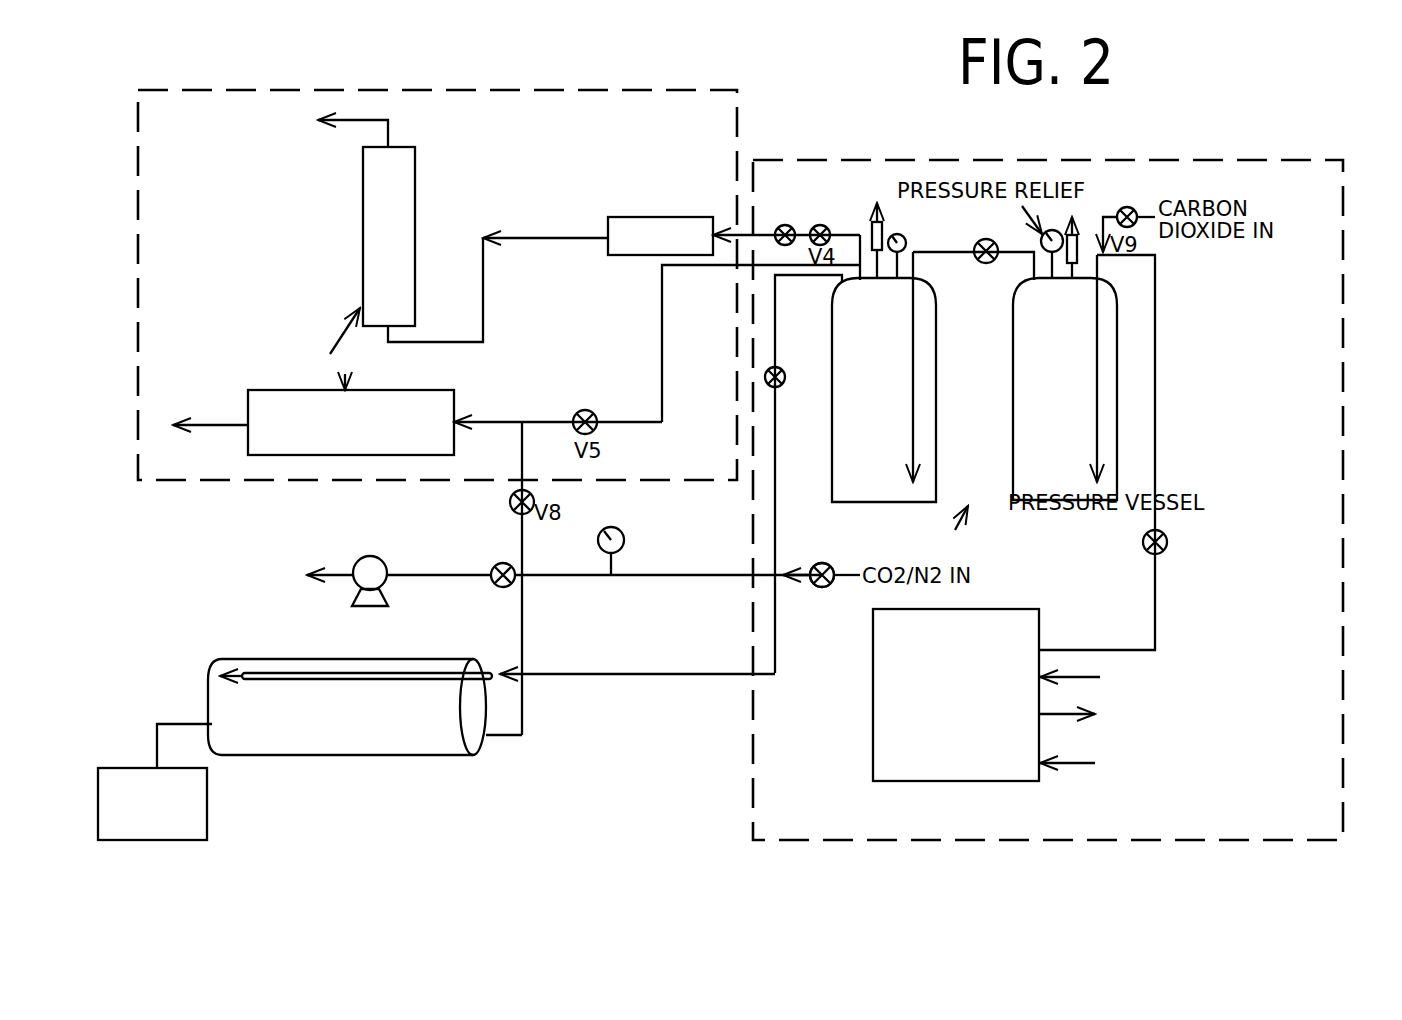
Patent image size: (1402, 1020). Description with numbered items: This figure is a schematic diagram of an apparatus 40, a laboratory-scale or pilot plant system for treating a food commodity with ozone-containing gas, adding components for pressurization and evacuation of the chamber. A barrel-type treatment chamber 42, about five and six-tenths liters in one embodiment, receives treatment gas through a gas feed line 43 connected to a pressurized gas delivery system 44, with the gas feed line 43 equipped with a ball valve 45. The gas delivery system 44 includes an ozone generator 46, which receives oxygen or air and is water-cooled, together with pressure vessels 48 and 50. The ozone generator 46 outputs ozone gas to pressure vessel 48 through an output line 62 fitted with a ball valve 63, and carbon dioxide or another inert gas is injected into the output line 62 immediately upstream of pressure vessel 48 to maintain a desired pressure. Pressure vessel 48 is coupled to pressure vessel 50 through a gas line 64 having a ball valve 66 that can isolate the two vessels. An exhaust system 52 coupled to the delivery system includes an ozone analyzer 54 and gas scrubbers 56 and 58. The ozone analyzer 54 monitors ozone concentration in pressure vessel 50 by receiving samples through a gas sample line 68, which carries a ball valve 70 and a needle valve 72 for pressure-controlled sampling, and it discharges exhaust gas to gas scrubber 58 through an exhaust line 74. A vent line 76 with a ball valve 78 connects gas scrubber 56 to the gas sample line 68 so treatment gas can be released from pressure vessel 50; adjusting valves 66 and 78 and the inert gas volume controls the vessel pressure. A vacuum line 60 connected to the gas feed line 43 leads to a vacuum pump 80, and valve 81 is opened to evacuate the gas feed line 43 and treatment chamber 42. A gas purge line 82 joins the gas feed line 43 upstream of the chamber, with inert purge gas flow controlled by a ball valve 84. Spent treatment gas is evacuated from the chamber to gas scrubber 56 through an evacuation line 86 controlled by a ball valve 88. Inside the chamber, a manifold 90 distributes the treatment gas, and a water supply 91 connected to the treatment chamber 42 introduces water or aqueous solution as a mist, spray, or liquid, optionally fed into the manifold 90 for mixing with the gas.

The apparatus 40 is at (1343, 150).
The treatment chamber 42 is at (347, 707).
The gas feed line 43 is at (686, 674).
The pressurized gas delivery system 44 is at (1343, 567).
The ball valve 45 is at (785, 380).
The ozone generator 46 is at (1083, 708).
The pressure vessel 48 is at (1065, 377).
The pressure vessel 50 is at (933, 377).
The exhaust system 52 is at (138, 205).
The ozone analyzer 54 is at (660, 211).
The gas scrubber 56 is at (331, 392).
The gas scrubber 58 is at (318, 218).
The vacuum line 60 is at (668, 575).
The output line 62 is at (1155, 433).
The ball valve 63 is at (1167, 535).
The gas line 64 is at (930, 252).
The ball valve 66 is at (997, 261).
The gas sample line 68 is at (848, 240).
The ball valve 70 is at (820, 224).
The needle valve 72 is at (781, 224).
The exhaust line 74 is at (513, 238).
The vent line 76 is at (662, 330).
The ball valve 78 is at (575, 412).
The vacuum pump 80 is at (370, 556).
The valve 81 is at (503, 587).
The gas purge line 82 is at (814, 567).
The ball valve 84 is at (824, 587).
The evacuation line 86 is at (522, 712).
The ball valve 88 is at (510, 502).
The manifold 90 is at (268, 673).
The water supply 91 is at (207, 805).